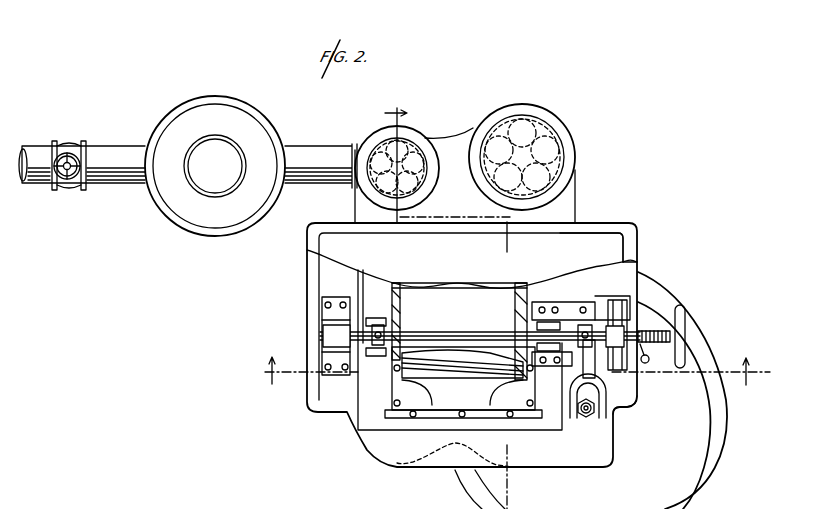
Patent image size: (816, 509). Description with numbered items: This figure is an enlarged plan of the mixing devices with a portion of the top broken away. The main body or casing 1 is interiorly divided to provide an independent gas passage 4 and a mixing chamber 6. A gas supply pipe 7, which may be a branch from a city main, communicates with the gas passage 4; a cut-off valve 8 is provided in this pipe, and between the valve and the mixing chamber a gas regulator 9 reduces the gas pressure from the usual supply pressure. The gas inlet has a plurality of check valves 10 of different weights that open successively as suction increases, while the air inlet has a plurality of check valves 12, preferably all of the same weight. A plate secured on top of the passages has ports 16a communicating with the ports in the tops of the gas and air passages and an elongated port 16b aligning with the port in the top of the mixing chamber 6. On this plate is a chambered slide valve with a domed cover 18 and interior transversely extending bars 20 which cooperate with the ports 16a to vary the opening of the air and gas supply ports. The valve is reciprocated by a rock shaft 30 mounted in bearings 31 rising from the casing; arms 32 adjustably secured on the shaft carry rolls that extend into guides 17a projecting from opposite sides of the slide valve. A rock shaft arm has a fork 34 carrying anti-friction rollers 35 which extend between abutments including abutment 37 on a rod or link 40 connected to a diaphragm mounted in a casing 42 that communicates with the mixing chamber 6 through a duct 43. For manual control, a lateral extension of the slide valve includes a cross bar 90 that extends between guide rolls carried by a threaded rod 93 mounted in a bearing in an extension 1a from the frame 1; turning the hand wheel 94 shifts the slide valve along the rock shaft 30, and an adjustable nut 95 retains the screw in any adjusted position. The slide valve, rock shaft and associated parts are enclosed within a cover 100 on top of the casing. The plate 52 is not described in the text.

The main body or casing 1 is at (309, 268).
The extension 1a is at (628, 302).
The gas passage 4 is at (508, 371).
The mixing chamber 6 is at (396, 156).
The gas supply pipe 7 is at (129, 178).
The cut-off valve 8 is at (68, 191).
The gas regulator 9 is at (258, 126).
The gas inlet check valves 10 is at (402, 140).
The air inlet check valves 12 is at (560, 134).
The ports 16a is at (462, 357).
The elongated port 16b is at (450, 397).
The guides 17a is at (378, 313).
The domed cover 18 is at (495, 292).
The bars 20 is at (470, 372).
The rock shaft 30 is at (456, 334).
The bearings 31 is at (322, 313).
The arms 32 is at (395, 336).
The fork 34 is at (612, 404).
The anti-friction roller 35 is at (592, 372).
The abutment 37 is at (600, 414).
The rod or link 40 is at (586, 416).
The casing 42 is at (663, 484).
The duct 43 is at (527, 405).
The cover plate 52 is at (405, 404).
The cross bar 90 is at (611, 296).
The threaded rod 93 is at (654, 356).
The hand wheel 94 is at (686, 326).
The adjustable nut 95 is at (649, 331).
The cover 100 is at (597, 243).